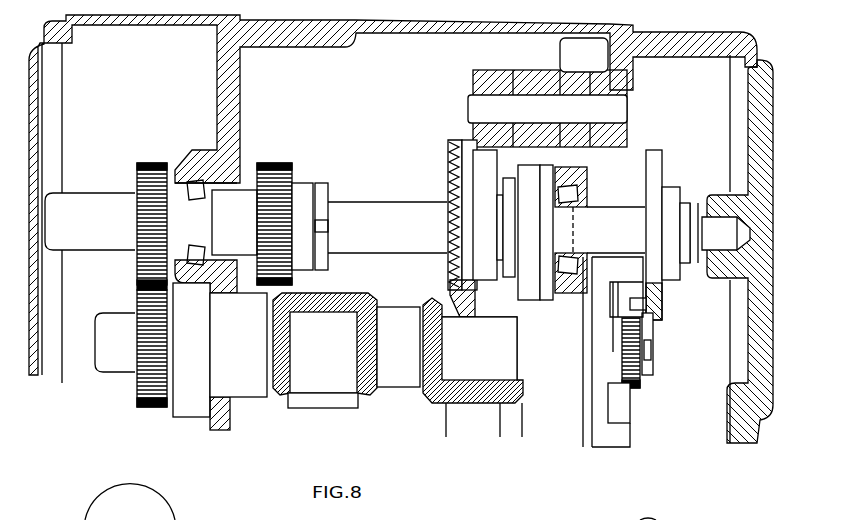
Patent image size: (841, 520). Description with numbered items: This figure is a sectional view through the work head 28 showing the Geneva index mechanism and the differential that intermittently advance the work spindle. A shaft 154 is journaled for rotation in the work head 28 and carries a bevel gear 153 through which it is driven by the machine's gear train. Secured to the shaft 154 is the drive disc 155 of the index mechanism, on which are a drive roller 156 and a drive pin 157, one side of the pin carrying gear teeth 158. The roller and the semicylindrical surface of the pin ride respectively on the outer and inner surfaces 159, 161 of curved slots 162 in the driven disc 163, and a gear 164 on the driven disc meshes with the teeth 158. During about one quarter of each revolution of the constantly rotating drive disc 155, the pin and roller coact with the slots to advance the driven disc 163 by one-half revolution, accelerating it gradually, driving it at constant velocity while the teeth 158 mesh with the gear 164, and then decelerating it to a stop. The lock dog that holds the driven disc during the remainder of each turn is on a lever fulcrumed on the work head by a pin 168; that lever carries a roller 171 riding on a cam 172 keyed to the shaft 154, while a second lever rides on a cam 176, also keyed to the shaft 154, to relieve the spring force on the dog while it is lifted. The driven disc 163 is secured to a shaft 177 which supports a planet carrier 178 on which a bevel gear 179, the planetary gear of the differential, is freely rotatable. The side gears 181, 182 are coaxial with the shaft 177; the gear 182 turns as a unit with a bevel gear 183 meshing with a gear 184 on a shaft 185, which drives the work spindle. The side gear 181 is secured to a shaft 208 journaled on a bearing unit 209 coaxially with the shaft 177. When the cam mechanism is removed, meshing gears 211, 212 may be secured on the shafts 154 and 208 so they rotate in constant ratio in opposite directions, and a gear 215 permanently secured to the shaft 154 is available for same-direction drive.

The work head 28 is at (232, 90).
The bevel gear 153 is at (452, 142).
The shaft 154 is at (378, 222).
The drive disc 155 is at (660, 170).
The drive roller 156 is at (627, 295).
The drive pin 157 is at (638, 303).
The gear teeth 158 is at (650, 322).
The outer surface 159 is at (610, 286).
The inner surface 161 is at (613, 320).
The curved slots 162 is at (618, 405).
The driven disc 163 is at (618, 435).
The gear 164 is at (642, 383).
The pin 168 is at (562, 93).
The roller 171 is at (543, 233).
The cam 172 is at (569, 176).
The cam 176 is at (525, 168).
The shaft 177 is at (485, 332).
The planet carrier 178 is at (323, 330).
The bevel gear 179 is at (365, 292).
The side gear 181 is at (278, 395).
The side gear 182 is at (377, 397).
The bevel gear 183 is at (422, 393).
The gear 184 is at (510, 407).
The shaft 185 is at (473, 423).
The shaft 208 is at (172, 410).
The bearing unit 209 is at (248, 385).
The gear 211 is at (138, 262).
The gear 212 is at (136, 405).
The gear 215 is at (287, 161).